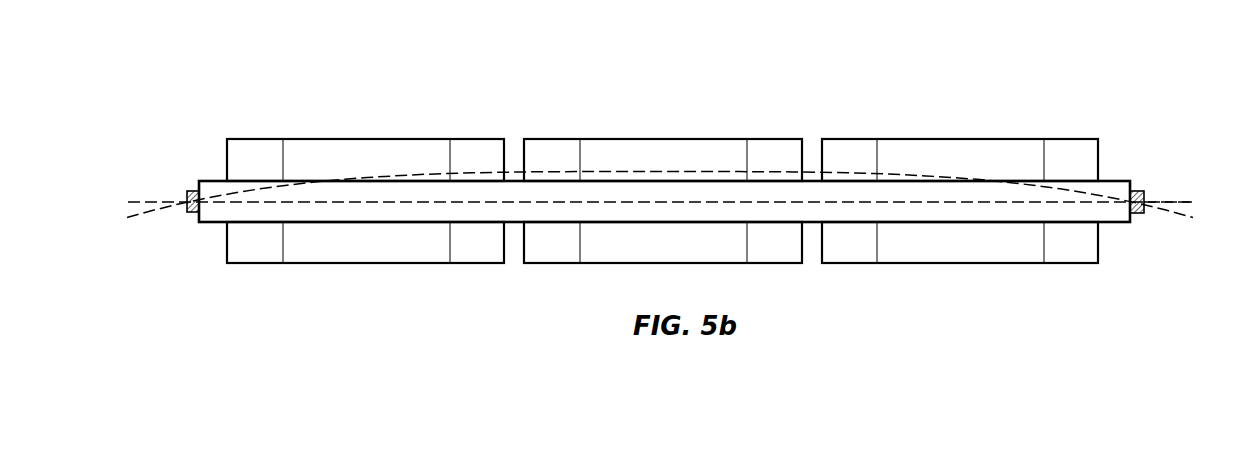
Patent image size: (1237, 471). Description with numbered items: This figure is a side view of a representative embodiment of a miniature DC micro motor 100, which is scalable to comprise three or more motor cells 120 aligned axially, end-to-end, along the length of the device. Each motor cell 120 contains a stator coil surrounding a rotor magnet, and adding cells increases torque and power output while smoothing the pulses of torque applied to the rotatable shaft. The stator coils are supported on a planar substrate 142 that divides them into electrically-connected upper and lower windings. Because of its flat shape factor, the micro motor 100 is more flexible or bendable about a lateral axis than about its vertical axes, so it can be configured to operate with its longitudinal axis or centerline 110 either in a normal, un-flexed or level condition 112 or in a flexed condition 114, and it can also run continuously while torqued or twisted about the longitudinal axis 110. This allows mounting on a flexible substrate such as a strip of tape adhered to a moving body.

The micro motor 100 is at (189, 112).
The longitudinal axis 110 is at (1173, 202).
The un-flexed condition 112 is at (913, 203).
The flexed condition 114 is at (713, 172).
The motor cells 120 is at (359, 118).
The planar substrate 142 is at (1116, 180).